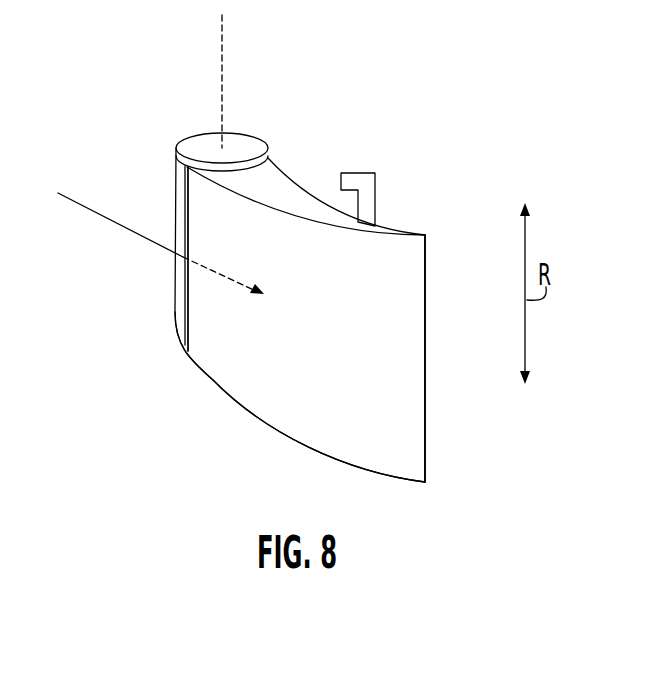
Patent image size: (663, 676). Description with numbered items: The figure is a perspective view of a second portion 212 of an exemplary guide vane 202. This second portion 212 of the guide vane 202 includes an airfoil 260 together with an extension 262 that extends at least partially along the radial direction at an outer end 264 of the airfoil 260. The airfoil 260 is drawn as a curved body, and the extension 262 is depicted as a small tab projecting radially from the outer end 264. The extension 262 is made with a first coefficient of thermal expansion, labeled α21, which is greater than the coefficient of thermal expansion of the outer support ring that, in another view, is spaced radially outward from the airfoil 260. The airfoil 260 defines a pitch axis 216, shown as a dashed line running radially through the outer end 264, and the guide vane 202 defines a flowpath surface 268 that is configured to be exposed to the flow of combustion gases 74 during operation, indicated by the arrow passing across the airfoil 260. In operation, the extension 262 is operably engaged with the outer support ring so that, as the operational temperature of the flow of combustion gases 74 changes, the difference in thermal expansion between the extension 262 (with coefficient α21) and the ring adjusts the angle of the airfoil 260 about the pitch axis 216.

The guide vane 202 is at (151, 79).
The pitch axis 216 is at (223, 68).
The outer end 264 is at (280, 185).
The extension 262 is at (370, 172).
The first coefficient of thermal expansion 21 is at (377, 209).
The flowpath surface 268 is at (421, 308).
The second portion 212 is at (318, 319).
The flow of combustion gases 74 is at (213, 269).
The airfoil 260 is at (222, 374).